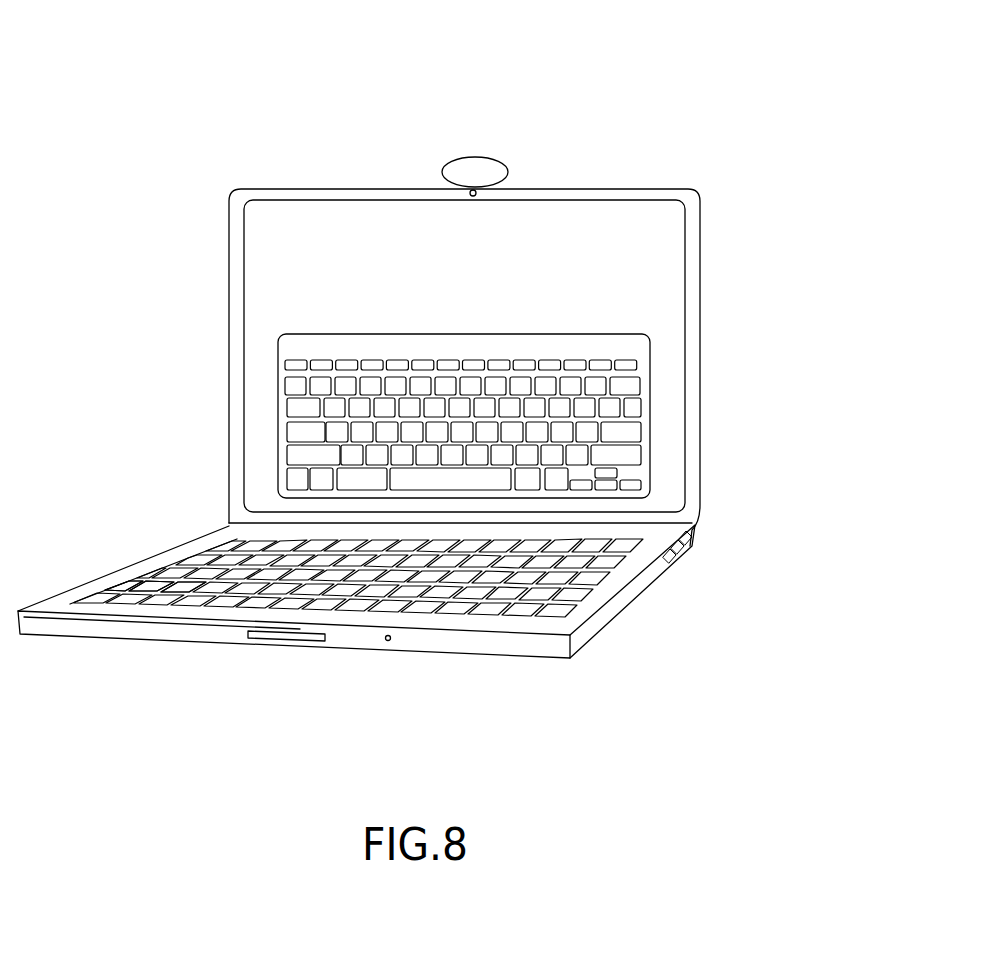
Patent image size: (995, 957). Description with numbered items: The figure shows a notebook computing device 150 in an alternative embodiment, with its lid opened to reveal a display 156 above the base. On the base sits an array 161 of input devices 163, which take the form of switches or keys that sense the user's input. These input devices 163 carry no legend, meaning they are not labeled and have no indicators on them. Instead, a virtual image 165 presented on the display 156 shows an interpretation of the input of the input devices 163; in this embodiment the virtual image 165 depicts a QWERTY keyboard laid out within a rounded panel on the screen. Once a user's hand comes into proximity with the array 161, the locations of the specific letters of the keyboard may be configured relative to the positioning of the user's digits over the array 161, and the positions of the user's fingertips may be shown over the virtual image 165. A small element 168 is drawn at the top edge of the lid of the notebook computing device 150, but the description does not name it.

The notebook computing device 150 is at (414, 349).
The display 156 is at (700, 372).
The camera 168 is at (506, 163).
The virtual image 165 is at (597, 333).
The array 161 is at (168, 572).
The input devices 163 is at (198, 603).